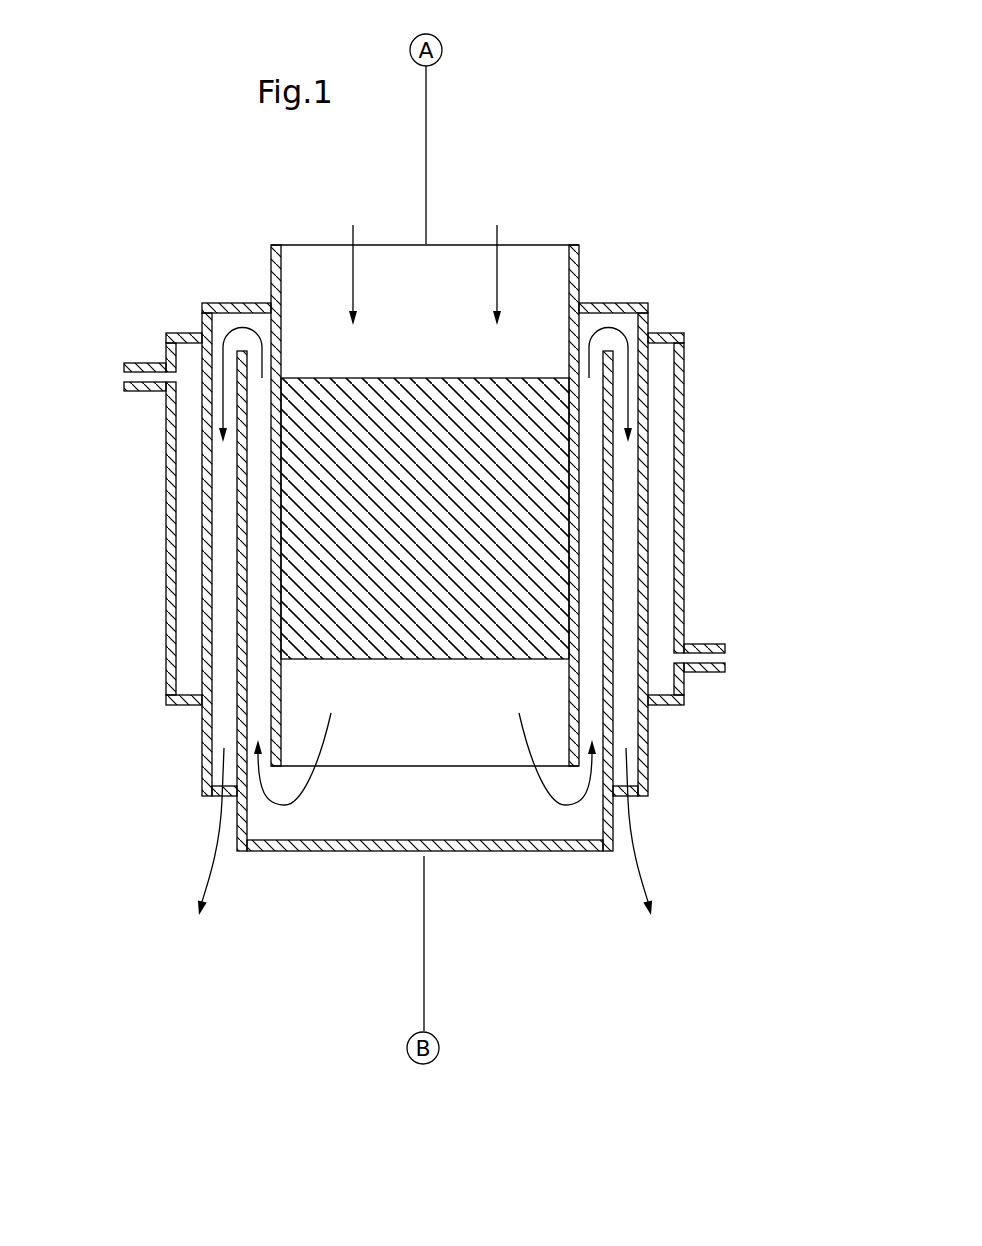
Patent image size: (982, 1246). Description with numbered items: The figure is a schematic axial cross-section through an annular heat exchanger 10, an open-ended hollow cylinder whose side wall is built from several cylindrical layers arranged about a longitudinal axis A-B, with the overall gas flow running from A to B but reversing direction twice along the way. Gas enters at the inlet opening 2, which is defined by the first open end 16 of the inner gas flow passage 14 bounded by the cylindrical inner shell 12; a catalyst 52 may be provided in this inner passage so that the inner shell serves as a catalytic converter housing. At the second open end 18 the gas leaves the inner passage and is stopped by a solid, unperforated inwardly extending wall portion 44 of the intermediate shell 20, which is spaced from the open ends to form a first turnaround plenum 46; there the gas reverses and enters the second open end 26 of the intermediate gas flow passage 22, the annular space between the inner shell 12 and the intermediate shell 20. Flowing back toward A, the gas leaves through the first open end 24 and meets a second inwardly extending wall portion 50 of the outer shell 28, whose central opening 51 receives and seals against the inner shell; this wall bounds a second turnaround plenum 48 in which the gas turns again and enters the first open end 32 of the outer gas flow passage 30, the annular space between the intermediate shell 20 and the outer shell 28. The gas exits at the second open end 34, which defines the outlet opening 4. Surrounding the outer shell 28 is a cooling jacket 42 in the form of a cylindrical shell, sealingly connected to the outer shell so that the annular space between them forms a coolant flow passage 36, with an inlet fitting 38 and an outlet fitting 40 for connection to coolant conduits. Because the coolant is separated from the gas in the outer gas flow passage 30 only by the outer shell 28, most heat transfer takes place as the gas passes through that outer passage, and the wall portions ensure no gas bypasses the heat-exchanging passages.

The inlet opening 2 is at (523, 245).
The outlet opening 4 is at (633, 812).
The annular heat exchanger 10 is at (690, 306).
The inner shell 12 is at (579, 537).
The inner gas flow passage 14 is at (382, 720).
The first open end 16 is at (320, 245).
The second open end 18 is at (515, 772).
The intermediate shell 20 is at (614, 583).
The intermediate gas flow passage 22 is at (257, 567).
The first open end 24 is at (266, 357).
The second open end 26 is at (613, 786).
The outer shell 28 is at (648, 447).
The outer gas flow passage 30 is at (220, 660).
The first open end 32 is at (217, 360).
The second open end 34 is at (213, 797).
The coolant flow passage 36 is at (190, 492).
The fitting 38 is at (150, 363).
The fitting 40 is at (710, 633).
The cooling jacket 42 is at (685, 355).
The inwardly extending wall portion 44 is at (348, 852).
The first turnaround plenum 46 is at (585, 810).
The second turnaround plenum 48 is at (610, 327).
The inwardly extending wall portion 50 is at (230, 303).
The central opening 51 is at (581, 303).
The catalyst 52 is at (440, 523).